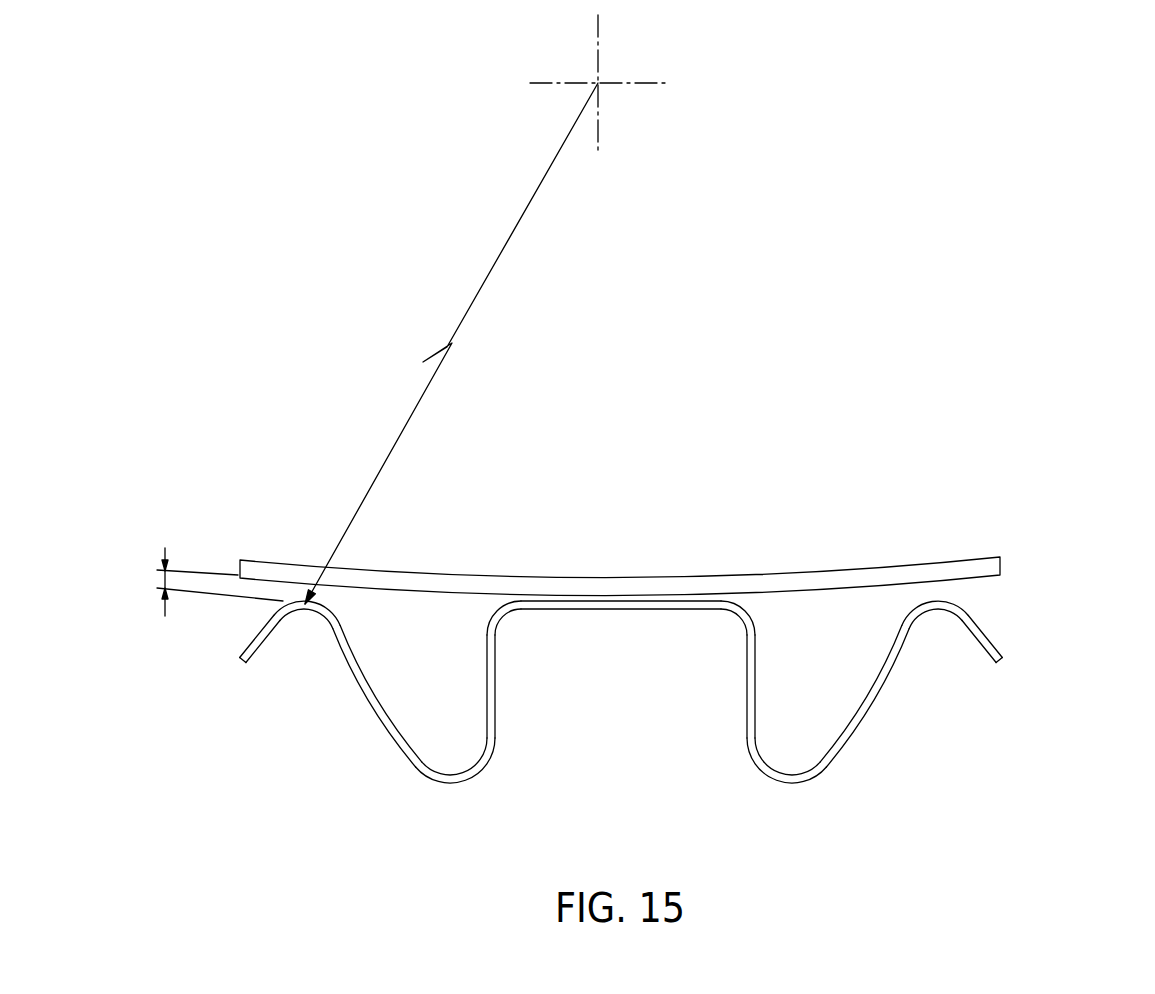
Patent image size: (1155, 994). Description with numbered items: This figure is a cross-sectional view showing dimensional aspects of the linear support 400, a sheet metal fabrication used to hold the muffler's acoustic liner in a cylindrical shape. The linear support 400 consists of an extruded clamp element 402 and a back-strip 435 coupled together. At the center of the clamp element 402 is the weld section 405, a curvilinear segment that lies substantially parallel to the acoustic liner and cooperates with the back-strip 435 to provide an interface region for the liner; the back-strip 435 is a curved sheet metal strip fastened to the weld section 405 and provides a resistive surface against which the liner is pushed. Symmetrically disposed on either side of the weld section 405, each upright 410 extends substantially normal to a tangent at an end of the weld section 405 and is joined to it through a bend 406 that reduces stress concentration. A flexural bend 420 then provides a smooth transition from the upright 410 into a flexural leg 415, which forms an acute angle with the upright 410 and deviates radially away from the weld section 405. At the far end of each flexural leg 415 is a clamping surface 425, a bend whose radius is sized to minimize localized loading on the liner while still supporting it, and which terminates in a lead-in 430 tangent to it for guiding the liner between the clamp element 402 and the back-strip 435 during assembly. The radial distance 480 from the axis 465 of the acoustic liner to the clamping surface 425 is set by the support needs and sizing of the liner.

The linear support 400 is at (1018, 443).
The clamp element 402 is at (840, 805).
The weld section 405 is at (160, 580).
The bend 406 is at (510, 622).
The upright 410 is at (742, 697).
The flexural leg 415 is at (365, 694).
The flexural bend 420 is at (442, 784).
The clamping surface 425 is at (300, 602).
The lead-in 430 is at (250, 664).
The back-strip 435 is at (878, 566).
The axis 465 is at (598, 83).
The radial distance 480 is at (418, 406).